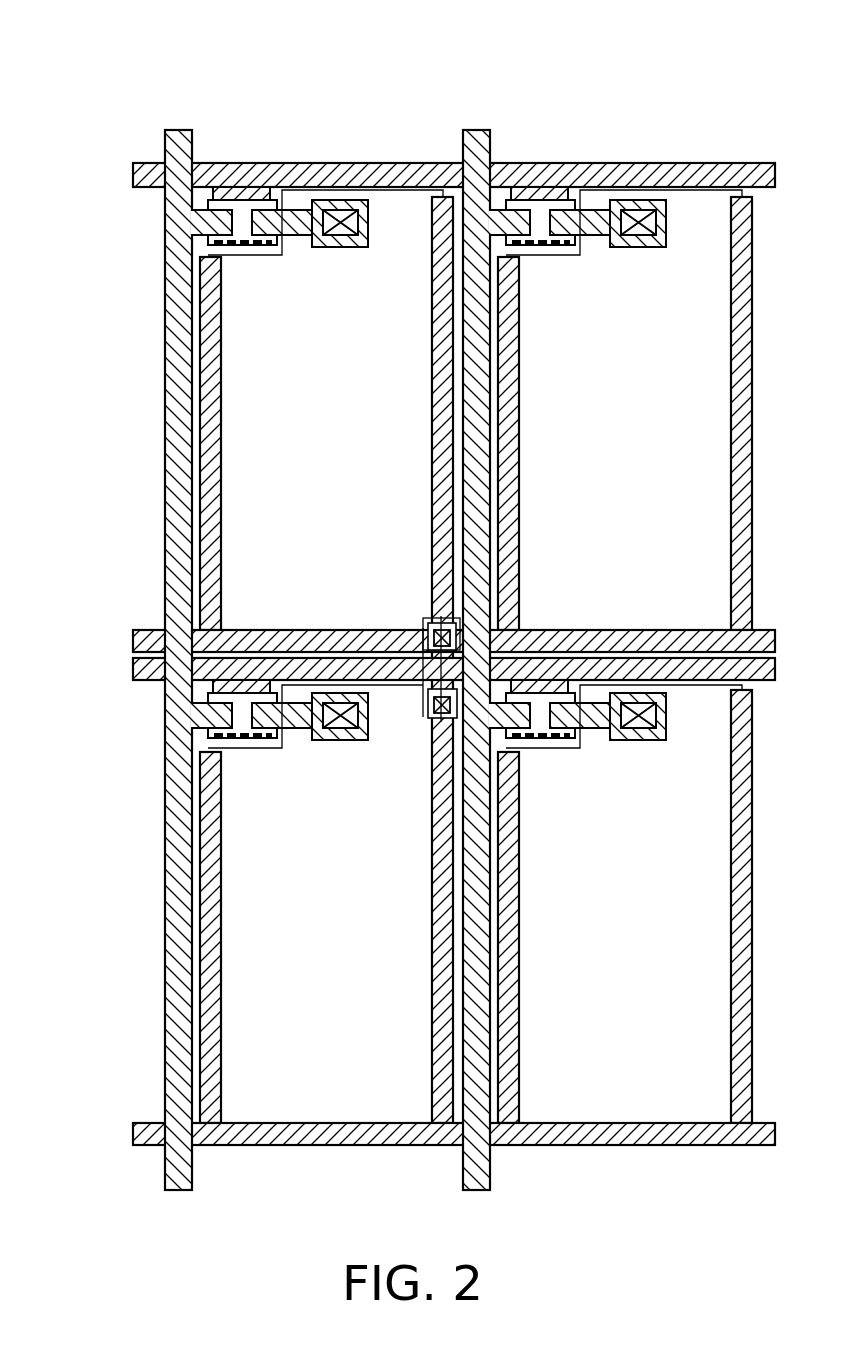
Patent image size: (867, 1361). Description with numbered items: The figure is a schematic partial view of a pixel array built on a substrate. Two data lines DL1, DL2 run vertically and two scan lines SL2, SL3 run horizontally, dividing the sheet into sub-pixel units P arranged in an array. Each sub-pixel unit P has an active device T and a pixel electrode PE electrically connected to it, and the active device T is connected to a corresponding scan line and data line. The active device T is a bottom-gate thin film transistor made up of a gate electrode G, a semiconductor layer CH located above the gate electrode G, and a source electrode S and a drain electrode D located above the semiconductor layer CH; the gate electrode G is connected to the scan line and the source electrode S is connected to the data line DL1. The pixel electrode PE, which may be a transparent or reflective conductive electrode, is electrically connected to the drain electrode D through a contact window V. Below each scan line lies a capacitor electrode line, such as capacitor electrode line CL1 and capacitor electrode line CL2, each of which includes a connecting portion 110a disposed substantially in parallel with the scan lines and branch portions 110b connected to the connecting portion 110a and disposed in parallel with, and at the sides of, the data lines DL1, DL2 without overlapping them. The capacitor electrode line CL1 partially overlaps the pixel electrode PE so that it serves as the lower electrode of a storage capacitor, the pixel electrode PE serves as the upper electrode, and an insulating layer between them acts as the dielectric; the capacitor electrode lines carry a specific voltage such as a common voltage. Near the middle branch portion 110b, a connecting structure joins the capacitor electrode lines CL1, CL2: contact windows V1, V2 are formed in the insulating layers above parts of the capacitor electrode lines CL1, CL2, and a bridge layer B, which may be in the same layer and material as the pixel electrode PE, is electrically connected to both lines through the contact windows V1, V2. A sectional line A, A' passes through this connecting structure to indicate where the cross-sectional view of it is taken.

The data line DL1 is at (186, 134).
The data line DL2 is at (485, 134).
The scan line SL2 is at (133, 176).
The scan line SL3 is at (133, 668).
The capacitor electrode line CL1 is at (396, 660).
The capacitor electrode line CL2 is at (133, 1135).
The connecting portion 110a is at (152, 630).
The branch portion 110b is at (432, 357).
The sub-pixel unit P is at (473, 374).
The active device T is at (325, 82).
The source electrode S is at (201, 218).
The semiconductor layer CH is at (222, 205).
The gate electrode G is at (240, 196).
The drain electrode D is at (266, 218).
The contact window V is at (349, 209).
The pixel electrode PE is at (394, 190).
The contact window V1 is at (436, 630).
The contact window V2 is at (437, 716).
The sectional line end A is at (409, 662).
The sectional line end A' is at (399, 717).
The bridge layer B is at (393, 644).